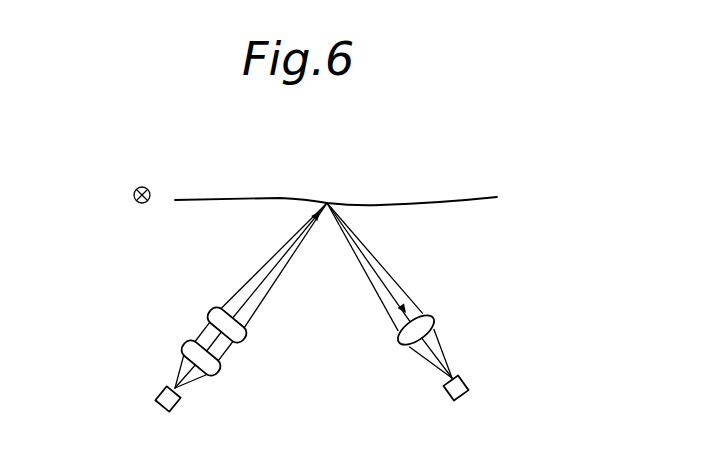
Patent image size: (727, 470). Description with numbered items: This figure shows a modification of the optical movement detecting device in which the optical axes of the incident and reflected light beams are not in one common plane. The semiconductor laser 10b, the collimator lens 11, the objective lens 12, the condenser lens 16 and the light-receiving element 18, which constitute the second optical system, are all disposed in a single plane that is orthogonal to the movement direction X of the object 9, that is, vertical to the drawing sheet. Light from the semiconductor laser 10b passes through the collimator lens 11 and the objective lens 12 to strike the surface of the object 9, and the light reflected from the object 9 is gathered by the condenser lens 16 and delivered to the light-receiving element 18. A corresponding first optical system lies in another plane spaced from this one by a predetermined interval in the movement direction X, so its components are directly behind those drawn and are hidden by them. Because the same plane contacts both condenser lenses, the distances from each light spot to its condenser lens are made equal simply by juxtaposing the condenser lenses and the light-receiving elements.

The object 9 is at (203, 200).
The movement direction X is at (138, 186).
The semiconductor laser 10b is at (177, 408).
The collimator lens 11 is at (190, 341).
The objective lens 12 is at (213, 312).
The condenser lens 16 is at (432, 318).
The light-receiving element 18 is at (467, 378).